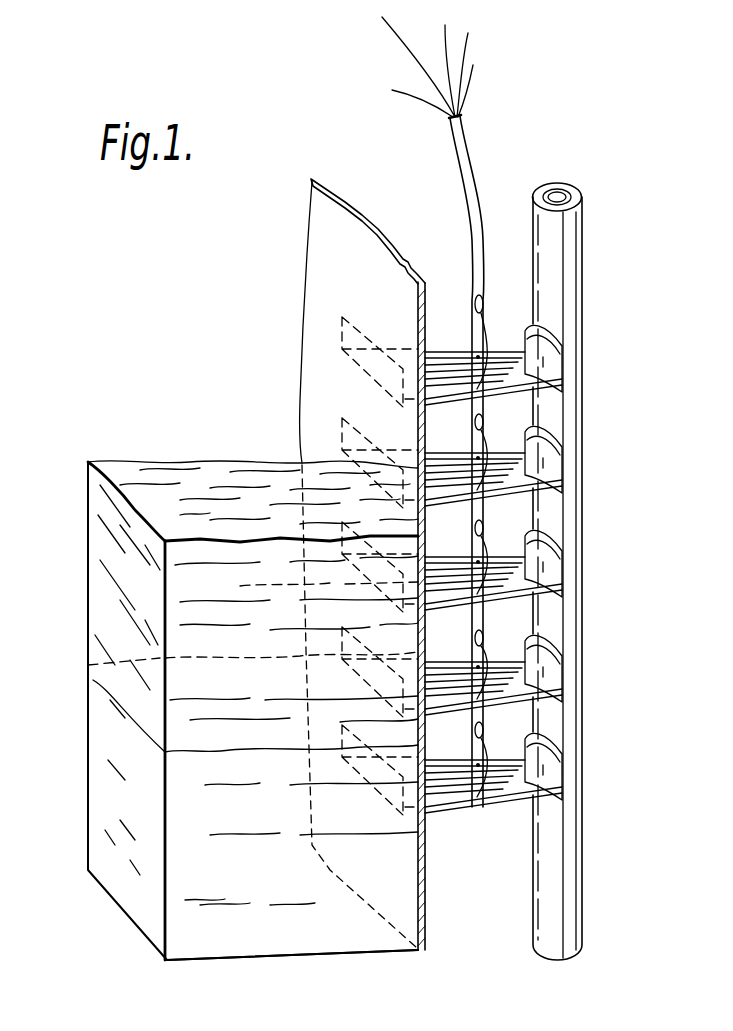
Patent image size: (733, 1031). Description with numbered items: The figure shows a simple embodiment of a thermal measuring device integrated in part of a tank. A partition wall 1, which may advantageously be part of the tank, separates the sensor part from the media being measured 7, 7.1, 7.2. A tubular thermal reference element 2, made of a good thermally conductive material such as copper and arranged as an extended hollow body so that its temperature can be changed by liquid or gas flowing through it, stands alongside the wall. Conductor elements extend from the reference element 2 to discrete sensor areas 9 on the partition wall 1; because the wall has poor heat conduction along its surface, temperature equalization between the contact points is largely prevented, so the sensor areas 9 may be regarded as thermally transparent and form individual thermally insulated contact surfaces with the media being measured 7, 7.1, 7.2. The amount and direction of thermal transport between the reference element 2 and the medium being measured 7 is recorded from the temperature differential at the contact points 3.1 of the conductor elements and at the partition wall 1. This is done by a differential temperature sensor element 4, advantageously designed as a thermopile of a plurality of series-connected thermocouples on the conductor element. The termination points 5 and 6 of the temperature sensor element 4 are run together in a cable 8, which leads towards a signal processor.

The partition wall 1 is at (345, 212).
The tubular thermal reference element 2 is at (568, 258).
The contact points 3.1 is at (553, 362).
The differential temperature sensor element 4 is at (517, 678).
The termination point 5 is at (477, 456).
The termination point 6 is at (478, 490).
The medium being measured 7 is at (184, 420).
The medium being measured 7.1 is at (98, 578).
The medium being measured 7.2 is at (323, 928).
The cable 8 is at (478, 165).
The sensor areas 9 is at (345, 350).